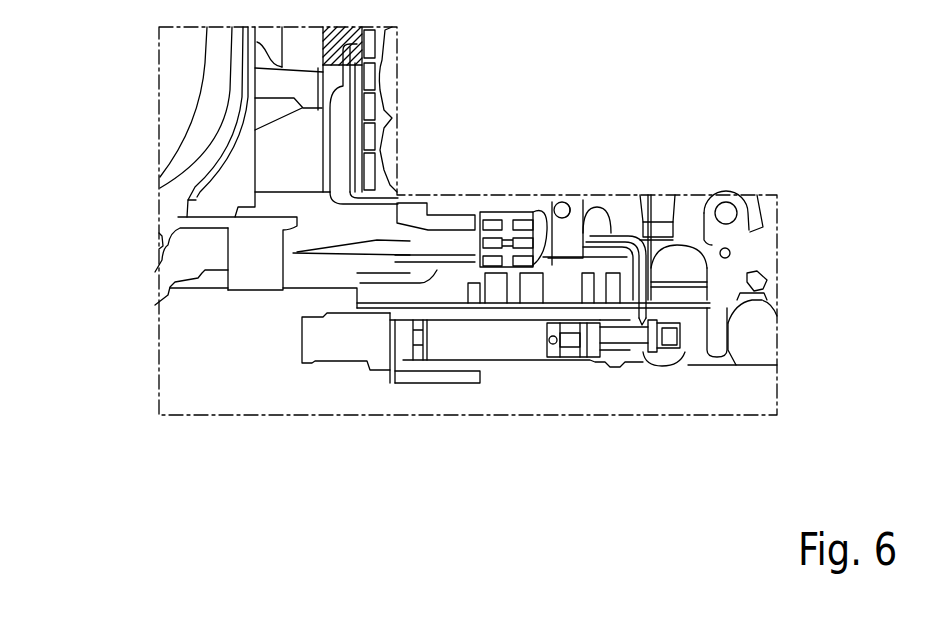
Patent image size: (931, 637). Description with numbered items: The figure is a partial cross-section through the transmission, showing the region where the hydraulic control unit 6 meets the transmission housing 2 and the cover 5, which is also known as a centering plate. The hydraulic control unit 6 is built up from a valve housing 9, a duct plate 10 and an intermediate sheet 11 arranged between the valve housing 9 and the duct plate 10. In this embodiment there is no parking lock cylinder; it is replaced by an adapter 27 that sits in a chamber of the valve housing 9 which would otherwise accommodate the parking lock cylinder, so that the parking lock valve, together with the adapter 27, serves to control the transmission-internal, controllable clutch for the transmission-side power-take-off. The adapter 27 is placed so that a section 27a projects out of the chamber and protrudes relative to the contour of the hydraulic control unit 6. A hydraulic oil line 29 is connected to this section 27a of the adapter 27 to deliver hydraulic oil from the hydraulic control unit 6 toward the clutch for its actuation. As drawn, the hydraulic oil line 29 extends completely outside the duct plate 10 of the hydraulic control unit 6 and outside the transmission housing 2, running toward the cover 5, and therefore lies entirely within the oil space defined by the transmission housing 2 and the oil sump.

The cover 5 is at (288, 85).
The hydraulic oil line 29 is at (340, 172).
The transmission housing 2 is at (258, 260).
The duct plate 10 is at (680, 280).
The intermediate sheet 11 is at (748, 280).
The valve housing 9 is at (748, 328).
The hydraulic control unit 6 is at (414, 392).
The adapter 27 is at (540, 340).
The section of the adapter 27a is at (665, 340).